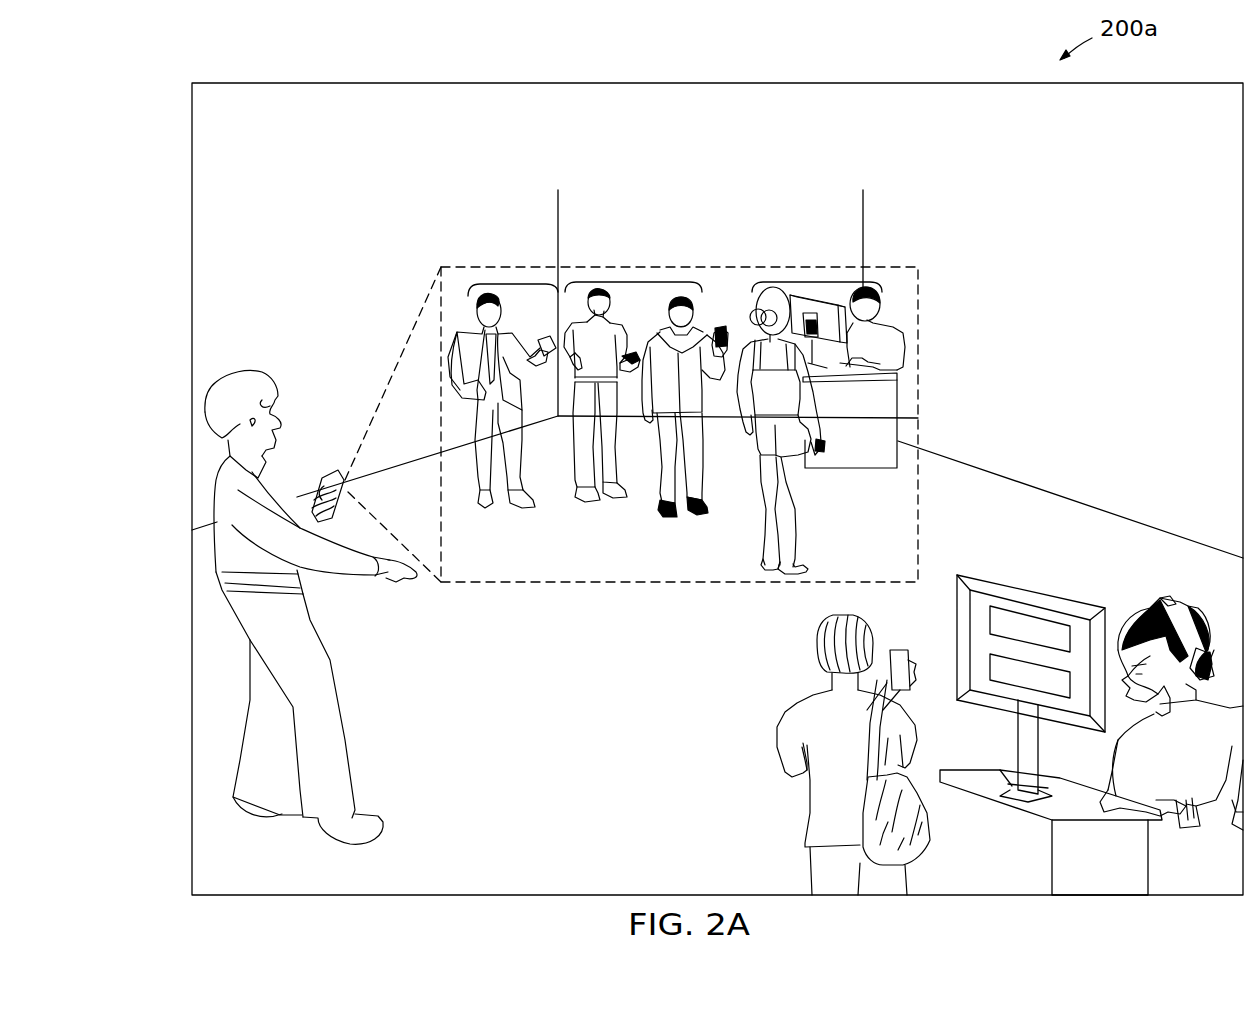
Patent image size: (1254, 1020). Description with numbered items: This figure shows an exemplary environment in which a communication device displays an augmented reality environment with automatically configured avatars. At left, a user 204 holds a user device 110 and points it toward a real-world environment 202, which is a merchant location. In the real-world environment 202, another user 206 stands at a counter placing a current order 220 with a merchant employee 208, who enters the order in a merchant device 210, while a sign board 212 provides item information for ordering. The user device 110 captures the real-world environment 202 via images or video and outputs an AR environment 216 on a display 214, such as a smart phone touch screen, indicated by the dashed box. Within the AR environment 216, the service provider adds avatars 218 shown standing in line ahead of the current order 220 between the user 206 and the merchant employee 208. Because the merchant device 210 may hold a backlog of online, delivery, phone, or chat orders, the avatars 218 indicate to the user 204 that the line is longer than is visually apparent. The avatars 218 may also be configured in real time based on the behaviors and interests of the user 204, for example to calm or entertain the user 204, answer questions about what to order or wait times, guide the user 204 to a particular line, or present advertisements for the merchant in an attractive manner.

The user device 110 is at (330, 476).
The real-world environment 202 is at (868, 122).
The user 204 is at (249, 362).
The user 206 is at (812, 656).
The merchant employee 208 is at (1147, 602).
The merchant device 210 is at (1029, 586).
The sign board 212 is at (1098, 400).
The display 214 is at (396, 367).
The AR environment 216 is at (507, 265).
The avatars 218 is at (582, 262).
The current order 220 is at (812, 264).